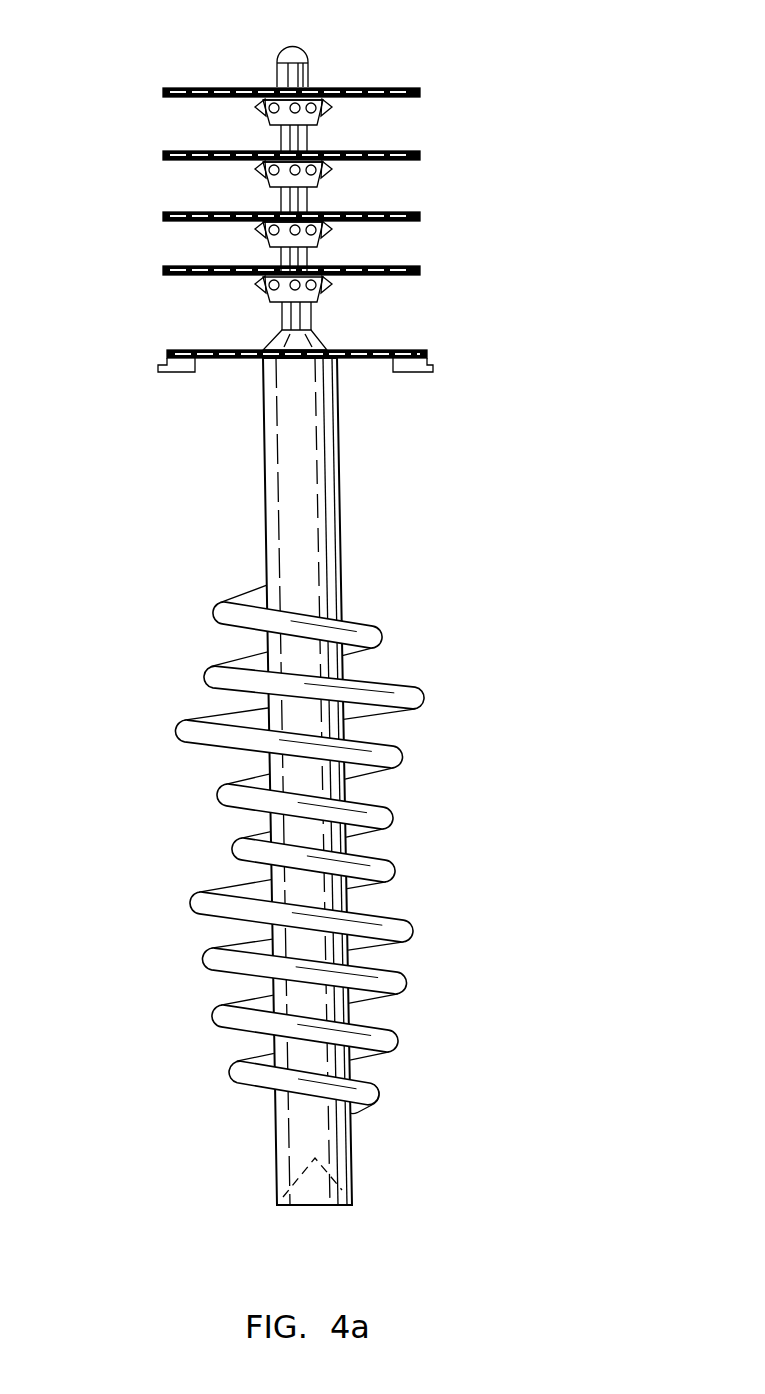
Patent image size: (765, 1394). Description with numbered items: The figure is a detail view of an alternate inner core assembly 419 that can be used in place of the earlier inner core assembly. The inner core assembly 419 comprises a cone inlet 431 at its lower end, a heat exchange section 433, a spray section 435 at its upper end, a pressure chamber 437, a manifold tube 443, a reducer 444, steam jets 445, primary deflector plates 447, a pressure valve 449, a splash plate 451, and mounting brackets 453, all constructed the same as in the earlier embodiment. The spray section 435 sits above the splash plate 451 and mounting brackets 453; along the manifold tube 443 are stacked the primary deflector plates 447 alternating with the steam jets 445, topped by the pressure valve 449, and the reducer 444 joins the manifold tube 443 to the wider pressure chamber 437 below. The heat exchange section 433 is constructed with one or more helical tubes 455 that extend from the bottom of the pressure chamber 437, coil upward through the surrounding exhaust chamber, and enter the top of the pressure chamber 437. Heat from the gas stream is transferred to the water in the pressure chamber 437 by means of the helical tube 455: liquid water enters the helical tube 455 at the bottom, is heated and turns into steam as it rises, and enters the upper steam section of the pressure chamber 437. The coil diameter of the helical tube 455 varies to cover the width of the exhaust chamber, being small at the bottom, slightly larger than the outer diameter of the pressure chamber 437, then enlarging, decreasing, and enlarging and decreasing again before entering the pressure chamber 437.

The inner core assembly 419 is at (342, 631).
The cone inlet 431 is at (344, 1210).
The heat exchange section 433 is at (269, 810).
The spray section 435 is at (310, 178).
The pressure chamber 437 is at (322, 543).
The manifold tube 443 is at (308, 78).
The reducer 444 is at (338, 325).
The steam jets 445 is at (333, 105).
The primary deflector plates 447 is at (205, 87).
The pressure valve 449 is at (302, 43).
The splash plate 451 is at (363, 358).
The mounting brackets 453 is at (433, 366).
The helical tube 455 is at (392, 758).